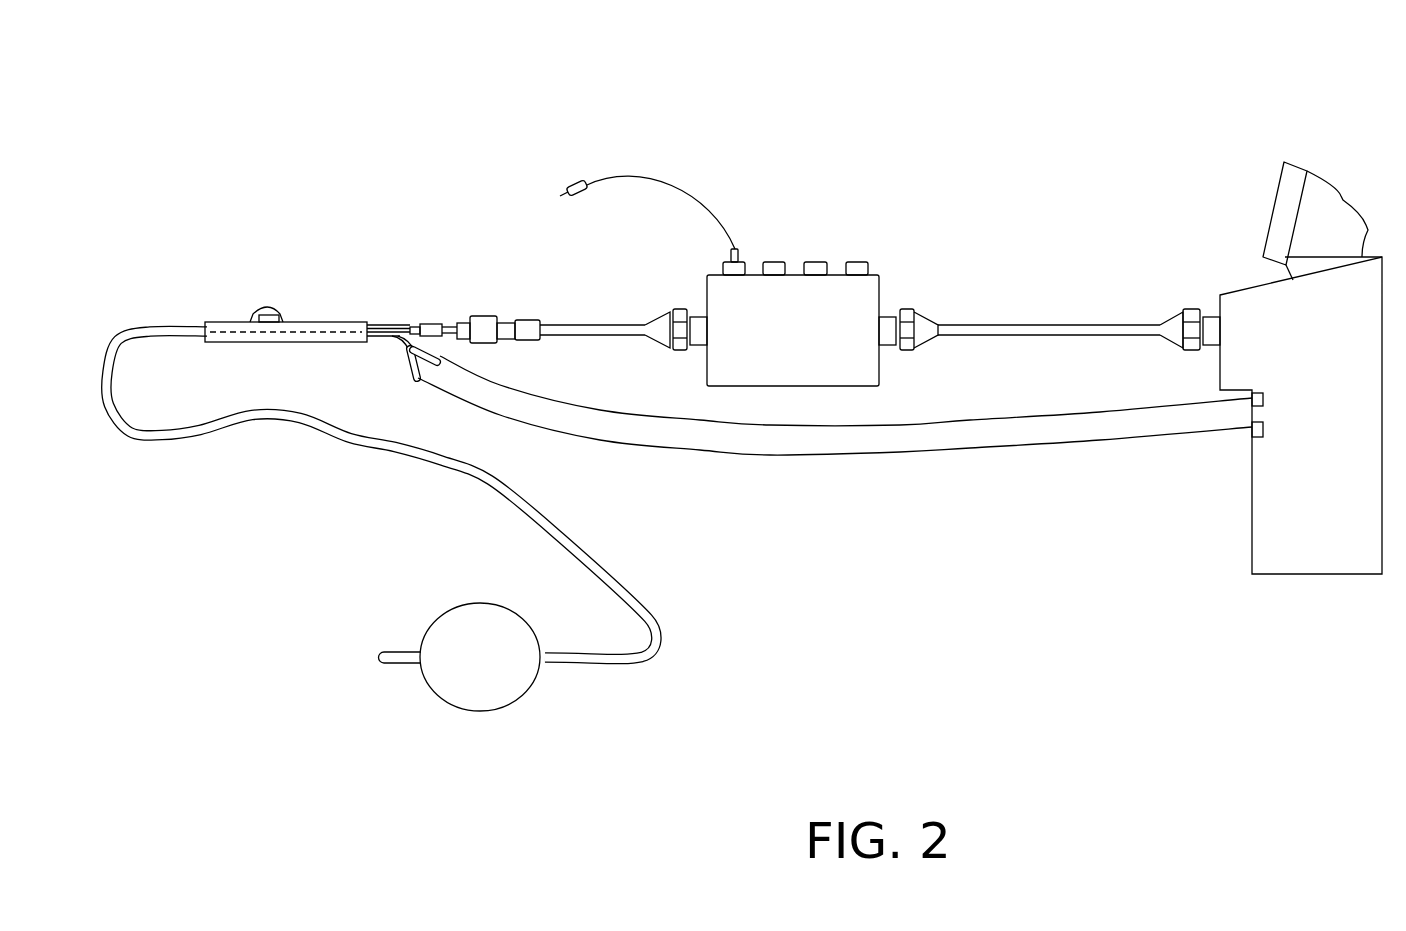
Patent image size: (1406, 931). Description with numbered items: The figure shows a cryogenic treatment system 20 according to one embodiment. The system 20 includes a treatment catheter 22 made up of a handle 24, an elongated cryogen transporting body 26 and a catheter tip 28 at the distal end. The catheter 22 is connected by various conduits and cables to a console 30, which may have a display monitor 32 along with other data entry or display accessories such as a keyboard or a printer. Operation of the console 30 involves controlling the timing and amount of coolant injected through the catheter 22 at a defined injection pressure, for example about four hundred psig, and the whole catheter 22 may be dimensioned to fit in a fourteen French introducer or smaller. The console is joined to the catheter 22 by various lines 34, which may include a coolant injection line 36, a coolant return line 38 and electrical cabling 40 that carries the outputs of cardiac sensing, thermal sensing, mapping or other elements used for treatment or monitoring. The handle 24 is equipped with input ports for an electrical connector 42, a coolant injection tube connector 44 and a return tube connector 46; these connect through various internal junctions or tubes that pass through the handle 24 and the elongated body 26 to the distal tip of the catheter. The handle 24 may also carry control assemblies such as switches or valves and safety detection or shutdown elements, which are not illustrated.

The cryogenic treatment system 20 is at (731, 62).
The treatment catheter 22 is at (187, 288).
The handle 24 is at (343, 322).
The elongated cryogen transporting body 26 is at (560, 533).
The catheter tip 28 is at (513, 748).
The console 30 is at (1238, 252).
The display monitor 32 is at (1272, 214).
The lines 34 is at (960, 257).
The coolant injection line 36 is at (797, 456).
The coolant return line 38 is at (888, 423).
The electrical cabling 40 is at (1047, 320).
The electrical connector 42 is at (483, 316).
The coolant injection tube connector 44 is at (405, 355).
The return tube connector 46 is at (430, 351).